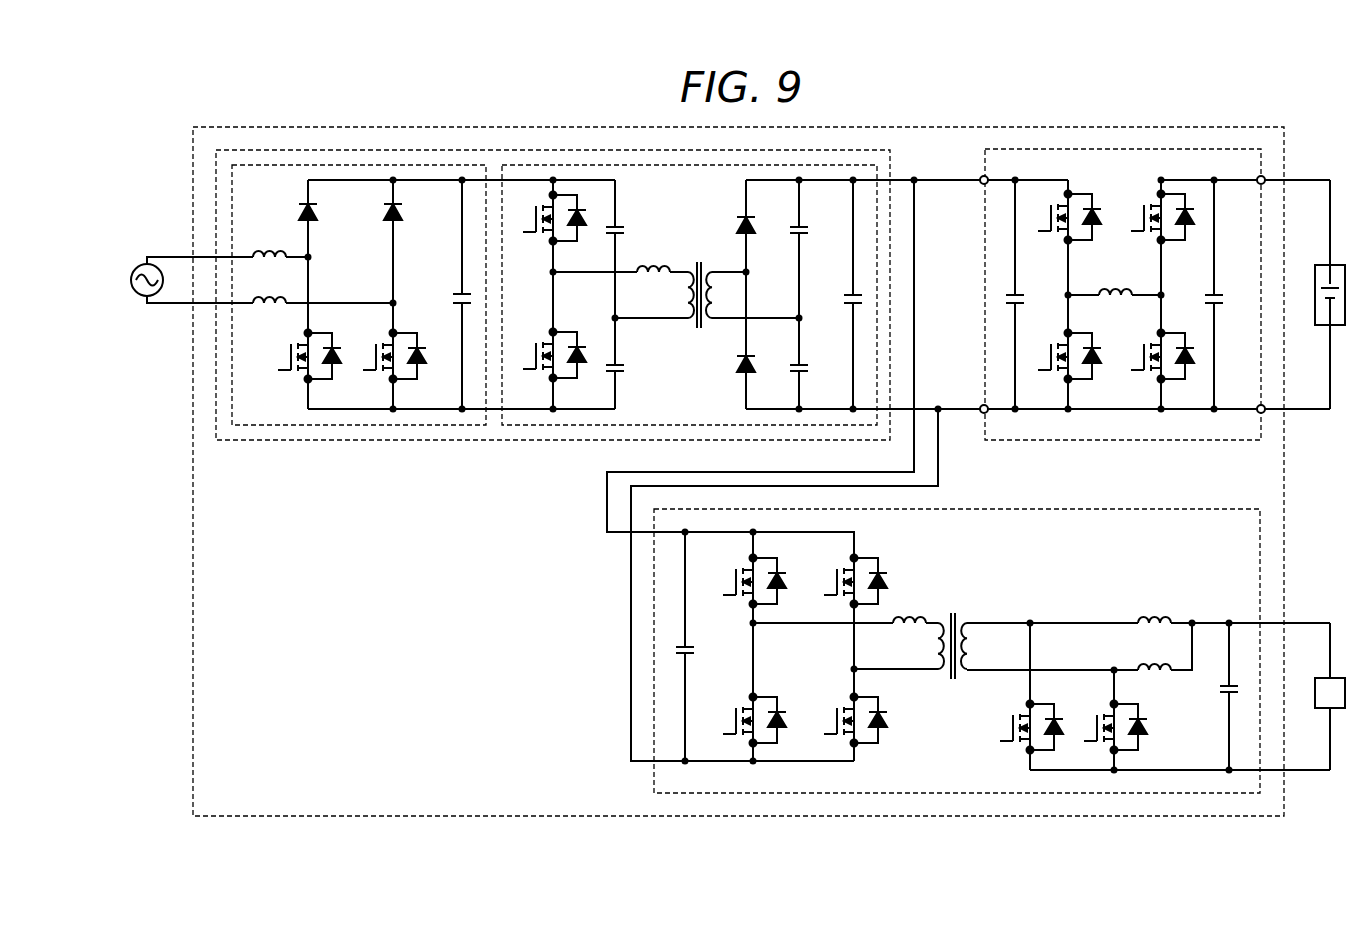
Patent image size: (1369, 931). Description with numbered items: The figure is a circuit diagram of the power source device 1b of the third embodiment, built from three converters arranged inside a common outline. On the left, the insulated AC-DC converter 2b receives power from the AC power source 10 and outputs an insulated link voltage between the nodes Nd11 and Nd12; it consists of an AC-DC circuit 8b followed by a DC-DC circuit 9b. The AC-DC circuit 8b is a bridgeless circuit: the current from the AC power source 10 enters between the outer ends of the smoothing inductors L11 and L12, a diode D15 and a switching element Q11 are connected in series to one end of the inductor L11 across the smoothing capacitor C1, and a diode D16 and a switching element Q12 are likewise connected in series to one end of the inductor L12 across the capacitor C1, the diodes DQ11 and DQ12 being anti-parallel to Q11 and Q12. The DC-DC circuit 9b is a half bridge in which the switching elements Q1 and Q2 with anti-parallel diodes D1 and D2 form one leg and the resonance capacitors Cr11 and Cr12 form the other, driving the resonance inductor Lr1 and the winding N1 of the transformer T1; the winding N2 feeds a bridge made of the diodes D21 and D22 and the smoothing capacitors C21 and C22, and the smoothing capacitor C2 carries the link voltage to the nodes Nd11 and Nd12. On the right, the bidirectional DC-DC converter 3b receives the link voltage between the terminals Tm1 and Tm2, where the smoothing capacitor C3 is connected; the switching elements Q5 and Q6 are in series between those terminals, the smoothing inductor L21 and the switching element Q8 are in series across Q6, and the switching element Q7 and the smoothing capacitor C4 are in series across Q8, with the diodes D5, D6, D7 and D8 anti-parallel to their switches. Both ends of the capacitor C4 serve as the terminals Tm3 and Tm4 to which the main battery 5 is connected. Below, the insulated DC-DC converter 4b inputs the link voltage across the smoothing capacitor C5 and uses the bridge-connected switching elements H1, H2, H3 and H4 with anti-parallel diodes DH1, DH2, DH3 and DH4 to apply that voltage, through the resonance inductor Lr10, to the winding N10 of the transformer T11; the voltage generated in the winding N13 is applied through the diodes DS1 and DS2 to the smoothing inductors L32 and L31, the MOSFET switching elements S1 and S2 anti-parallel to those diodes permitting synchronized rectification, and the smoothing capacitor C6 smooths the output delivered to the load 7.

The power source device 1b is at (193, 649).
The insulated AC-DC converter 2b is at (276, 441).
The AC-DC circuit 8b is at (316, 426).
The DC-DC circuit 9b is at (709, 425).
The bidirectional DC-DC converter 3b is at (1108, 149).
The insulated DC-DC converter 4b is at (1086, 509).
The AC power source 10 is at (148, 264).
The main battery 5 is at (1320, 265).
The load 7 is at (1320, 678).
The smoothing inductor L11 is at (266, 251).
The smoothing inductor L12 is at (266, 297).
The diode D15 is at (316, 212).
The diode D16 is at (401, 212).
The smoothing capacitor C1 is at (455, 294).
The switching element Q11 is at (291, 354).
The switching element Q12 is at (376, 354).
The diode DQ11 is at (332, 376).
The diode DQ12 is at (417, 376).
The switching element Q1 is at (536, 216).
The switching element Q2 is at (536, 353).
The anti-parallel diode D1 is at (577, 241).
The anti-parallel diode D2 is at (577, 378).
The resonance capacitor Cr11 is at (618, 227).
The resonance capacitor Cr12 is at (618, 365).
The resonance inductor Lr1 is at (653, 266).
The transformer T1 is at (699, 262).
The winding N1 is at (683, 297).
The winding N2 is at (713, 318).
The diode D21 is at (752, 230).
The diode D22 is at (752, 370).
The smoothing capacitor C21 is at (805, 227).
The smoothing capacitor C22 is at (805, 365).
The smoothing capacitor C2 is at (848, 294).
The terminal Tm1 is at (981, 177).
The terminal Tm2 is at (981, 406).
The terminal Tm3 is at (1259, 183).
The terminal Tm4 is at (1259, 406).
The node Nd11 is at (915, 183).
The node Nd12 is at (940, 412).
The smoothing capacitor C3 is at (1010, 303).
The smoothing capacitor C4 is at (1218, 295).
The switching element Q5 is at (1051, 216).
The switching element Q6 is at (1051, 354).
The switching element Q7 is at (1144, 216).
The switching element Q8 is at (1144, 354).
The diode D5 is at (1092, 240).
The diode D6 is at (1092, 379).
The diode D7 is at (1185, 240).
The diode D8 is at (1185, 379).
The smoothing inductor L21 is at (1116, 289).
The smoothing capacitor C5 is at (680, 655).
The switching element H1 is at (736, 575).
The switching element H2 is at (736, 714).
The switching element H3 is at (837, 575).
The switching element H4 is at (837, 714).
The diode DH1 is at (779, 575).
The diode DH2 is at (779, 714).
The diode DH3 is at (880, 575).
The diode DH4 is at (880, 714).
The resonance inductor Lr10 is at (904, 614).
The transformer T11 is at (952, 613).
The winding N10 is at (936, 643).
The winding N13 is at (966, 670).
The smoothing inductor L32 is at (1158, 617).
The smoothing inductor L31 is at (1158, 664).
The switching element S2 is at (1013, 720).
The switching element S1 is at (1097, 720).
The diode DS2 is at (1056, 720).
The diode DS1 is at (1140, 720).
The smoothing capacitor C6 is at (1222, 692).